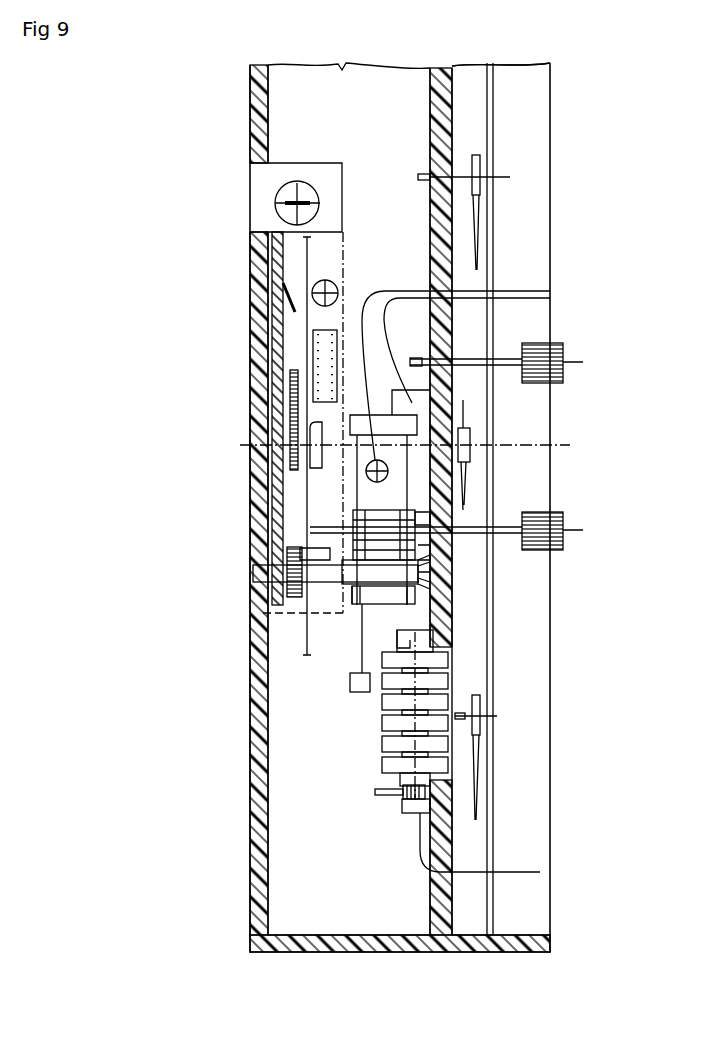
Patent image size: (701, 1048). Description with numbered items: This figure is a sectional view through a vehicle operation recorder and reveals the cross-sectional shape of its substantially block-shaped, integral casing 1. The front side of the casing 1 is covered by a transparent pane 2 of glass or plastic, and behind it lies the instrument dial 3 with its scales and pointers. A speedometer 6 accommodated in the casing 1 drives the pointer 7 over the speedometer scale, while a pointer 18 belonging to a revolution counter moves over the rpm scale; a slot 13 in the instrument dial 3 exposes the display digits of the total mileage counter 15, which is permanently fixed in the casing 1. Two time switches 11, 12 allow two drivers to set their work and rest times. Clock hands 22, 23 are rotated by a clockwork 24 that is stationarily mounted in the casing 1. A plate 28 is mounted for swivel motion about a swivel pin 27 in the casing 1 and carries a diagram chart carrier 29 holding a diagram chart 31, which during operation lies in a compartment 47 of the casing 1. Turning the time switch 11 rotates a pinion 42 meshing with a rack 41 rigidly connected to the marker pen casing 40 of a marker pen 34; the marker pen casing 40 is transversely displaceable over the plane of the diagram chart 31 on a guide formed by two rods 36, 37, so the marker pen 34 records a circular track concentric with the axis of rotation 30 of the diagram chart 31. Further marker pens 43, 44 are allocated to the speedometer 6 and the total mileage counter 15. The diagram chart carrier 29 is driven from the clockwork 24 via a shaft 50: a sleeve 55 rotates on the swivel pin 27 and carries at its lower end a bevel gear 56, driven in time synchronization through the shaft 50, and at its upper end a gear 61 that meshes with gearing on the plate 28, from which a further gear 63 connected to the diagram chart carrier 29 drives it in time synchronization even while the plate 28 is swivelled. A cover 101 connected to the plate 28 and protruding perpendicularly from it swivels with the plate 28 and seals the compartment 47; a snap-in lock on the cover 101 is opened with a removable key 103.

The casing 1 is at (251, 830).
The transparent pane 2 is at (490, 105).
The instrument dial 3 is at (453, 108).
The speedometer 6 is at (540, 872).
The pointer 7 is at (474, 767).
The time switch 11 is at (562, 537).
The time switch 12 is at (550, 345).
The slot 13 is at (452, 658).
The total mileage counter 15 is at (450, 683).
The pointer 18 is at (475, 223).
The clock hand 22 is at (465, 412).
The clock hand 23 is at (470, 477).
The clockwork 24 is at (550, 298).
The swivel pin 27 is at (253, 572).
The plate 28 is at (287, 368).
The diagram chart carrier 29 is at (315, 420).
The axis of rotation 30 is at (250, 445).
The diagram chart 31 is at (272, 250).
The marker pen 34 is at (345, 513).
The rod 36 is at (453, 610).
The rod 37 is at (352, 637).
The marker pen casing 40 is at (290, 548).
The rack 41 is at (350, 468).
The pinion 42 is at (550, 291).
The marker pen 43 is at (300, 550).
The marker pen 44 is at (362, 604).
The compartment 47 is at (307, 268).
The shaft 50 is at (453, 515).
The sleeve 55 is at (352, 596).
The bevel gear 56 is at (453, 552).
The gear 61 is at (287, 596).
The gear 63 is at (297, 378).
The cover 101 is at (268, 193).
The key 103 is at (297, 192).